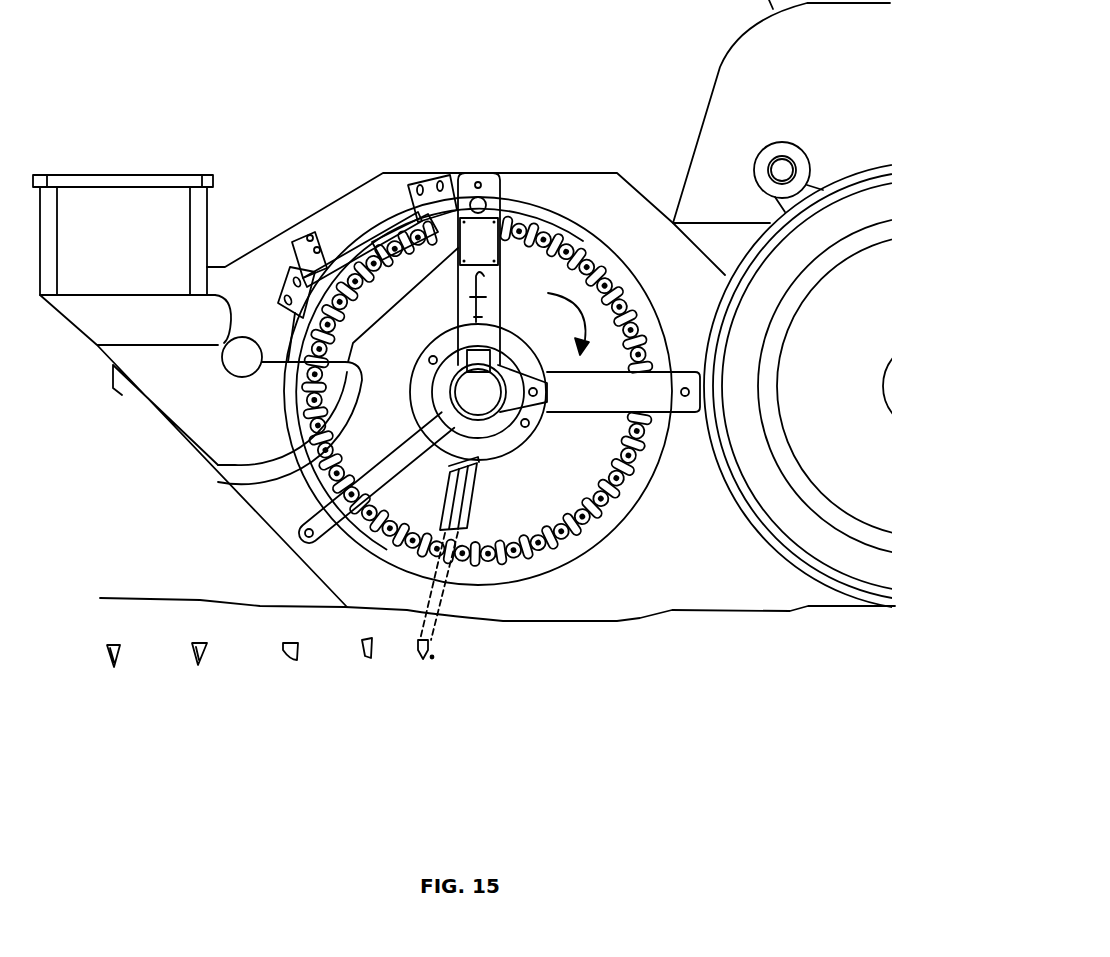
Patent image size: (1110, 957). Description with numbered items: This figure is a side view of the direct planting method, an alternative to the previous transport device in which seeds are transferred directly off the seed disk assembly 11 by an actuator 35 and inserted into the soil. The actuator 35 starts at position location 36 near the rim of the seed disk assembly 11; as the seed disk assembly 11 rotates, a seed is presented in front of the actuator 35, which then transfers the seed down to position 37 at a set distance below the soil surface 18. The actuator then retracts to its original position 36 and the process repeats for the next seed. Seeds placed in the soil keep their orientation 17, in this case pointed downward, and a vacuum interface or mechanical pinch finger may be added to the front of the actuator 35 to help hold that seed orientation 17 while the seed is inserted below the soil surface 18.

The seed disk assembly 11 is at (533, 273).
The seed orientation 17 is at (352, 682).
The soil ground surface 18 is at (643, 632).
The actuator 35 is at (434, 500).
The position location 36 is at (470, 578).
The position 37 is at (432, 676).